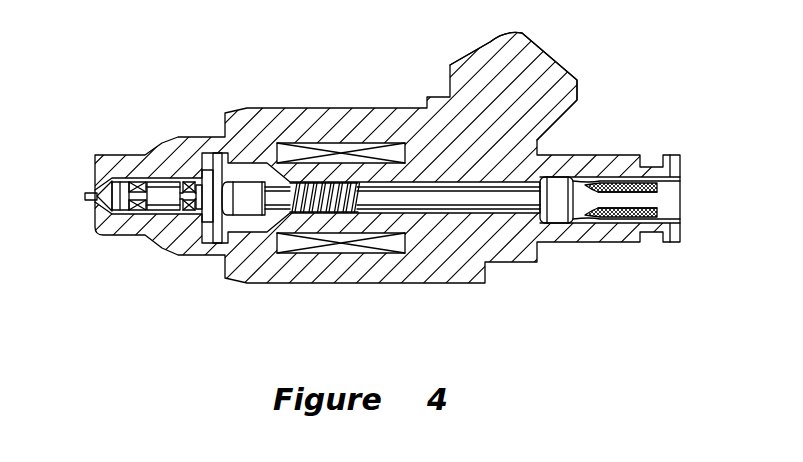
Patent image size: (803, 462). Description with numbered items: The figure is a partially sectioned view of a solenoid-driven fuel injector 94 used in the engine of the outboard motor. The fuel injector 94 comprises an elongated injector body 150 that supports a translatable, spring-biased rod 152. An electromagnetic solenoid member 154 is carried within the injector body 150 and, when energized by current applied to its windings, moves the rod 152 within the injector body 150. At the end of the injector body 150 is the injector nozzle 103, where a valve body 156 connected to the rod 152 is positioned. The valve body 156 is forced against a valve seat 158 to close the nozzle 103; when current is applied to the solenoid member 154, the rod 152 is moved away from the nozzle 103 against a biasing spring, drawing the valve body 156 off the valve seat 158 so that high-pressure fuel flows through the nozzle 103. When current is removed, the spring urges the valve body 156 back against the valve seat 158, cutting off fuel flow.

The fuel injector 94 is at (583, 45).
The injector nozzle 103 is at (97, 212).
The injector body 150 is at (352, 283).
The rod 152 is at (510, 207).
The solenoid member 154 is at (358, 142).
The valve body 156 is at (118, 188).
The valve seat 158 is at (110, 183).